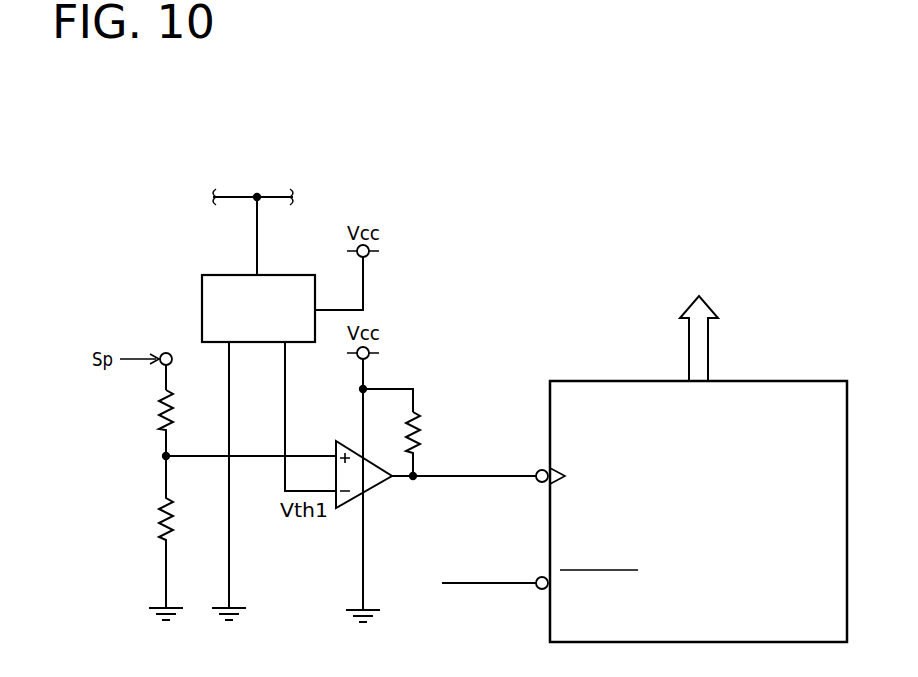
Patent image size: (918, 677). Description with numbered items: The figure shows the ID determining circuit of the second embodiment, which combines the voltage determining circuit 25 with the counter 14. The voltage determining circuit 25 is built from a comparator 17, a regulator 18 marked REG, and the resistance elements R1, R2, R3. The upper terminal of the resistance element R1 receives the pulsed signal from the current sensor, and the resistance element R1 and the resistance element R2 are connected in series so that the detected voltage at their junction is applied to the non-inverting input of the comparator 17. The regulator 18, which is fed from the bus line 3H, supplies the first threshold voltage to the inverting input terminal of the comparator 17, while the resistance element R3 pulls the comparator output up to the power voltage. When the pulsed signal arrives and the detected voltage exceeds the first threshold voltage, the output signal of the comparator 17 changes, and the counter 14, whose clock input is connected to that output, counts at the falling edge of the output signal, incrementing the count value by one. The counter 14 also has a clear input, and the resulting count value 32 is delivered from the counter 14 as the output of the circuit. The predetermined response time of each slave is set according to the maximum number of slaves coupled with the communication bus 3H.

The communication bus 3H is at (238, 192).
The regulator 18 is at (225, 273).
The voltage determining circuit 25 is at (421, 385).
The comparator 17 is at (373, 489).
The counter 14 is at (615, 378).
The count value output 32 is at (628, 260).
The resistance element R1 is at (157, 409).
The resistance element R2 is at (157, 516).
The resistance element R3 is at (420, 431).